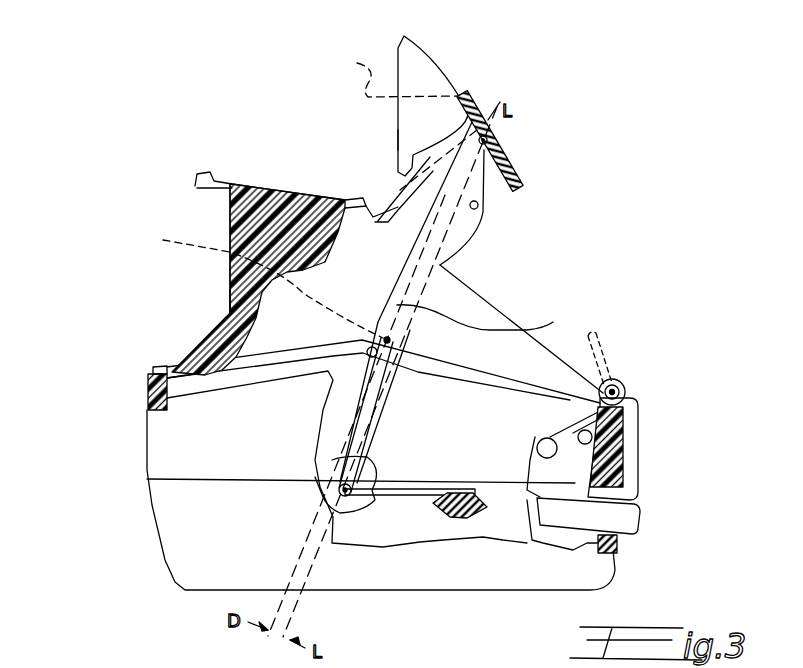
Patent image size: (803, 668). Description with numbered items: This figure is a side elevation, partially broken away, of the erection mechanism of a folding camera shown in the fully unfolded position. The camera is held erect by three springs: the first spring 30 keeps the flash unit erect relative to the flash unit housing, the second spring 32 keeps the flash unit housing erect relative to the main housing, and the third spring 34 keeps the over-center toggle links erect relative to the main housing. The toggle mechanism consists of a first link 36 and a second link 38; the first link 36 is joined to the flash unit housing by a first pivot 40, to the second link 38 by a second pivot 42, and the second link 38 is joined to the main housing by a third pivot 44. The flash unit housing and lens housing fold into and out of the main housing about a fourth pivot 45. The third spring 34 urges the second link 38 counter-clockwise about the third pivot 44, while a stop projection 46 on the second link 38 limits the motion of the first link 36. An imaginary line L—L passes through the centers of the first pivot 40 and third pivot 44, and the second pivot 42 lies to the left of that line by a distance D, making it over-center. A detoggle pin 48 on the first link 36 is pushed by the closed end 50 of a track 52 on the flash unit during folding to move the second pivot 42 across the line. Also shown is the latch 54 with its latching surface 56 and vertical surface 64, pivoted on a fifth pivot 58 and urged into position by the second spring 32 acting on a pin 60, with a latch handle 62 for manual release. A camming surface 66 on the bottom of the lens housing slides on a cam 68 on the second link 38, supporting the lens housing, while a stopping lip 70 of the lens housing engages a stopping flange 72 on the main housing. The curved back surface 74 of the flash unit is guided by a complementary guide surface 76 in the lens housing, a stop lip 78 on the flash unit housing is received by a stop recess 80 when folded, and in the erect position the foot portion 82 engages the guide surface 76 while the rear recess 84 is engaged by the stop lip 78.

The first spring 30 is at (392, 75).
The second spring 32 is at (620, 428).
The third spring 34 is at (420, 533).
The first link 36 is at (460, 230).
The second link 38 is at (148, 397).
The first pivot 40 is at (495, 160).
The second pivot 42 is at (260, 284).
The third pivot 44 is at (340, 490).
The fourth pivot 45 is at (624, 390).
The stop projection 46 is at (553, 322).
The detoggle pin 48 is at (487, 208).
The closed end 50 is at (397, 148).
The track 52 is at (493, 192).
The latch 54 is at (645, 500).
The latching surface 56 is at (527, 557).
The fifth pivot 58 is at (543, 448).
The pin 60 is at (612, 455).
The latch handle 62 is at (635, 522).
The vertical surface 64 is at (520, 482).
The camming surface 66 is at (417, 368).
The cam 68 is at (228, 304).
The stopping lip 70 is at (162, 372).
The stopping flange 72 is at (178, 367).
The curved back surface 74 is at (430, 70).
The guide surface 76 is at (230, 226).
The stop lip 78 is at (473, 117).
The stop recess 80 is at (370, 200).
The foot portion 82 is at (410, 203).
The rear recess 84 is at (477, 97).